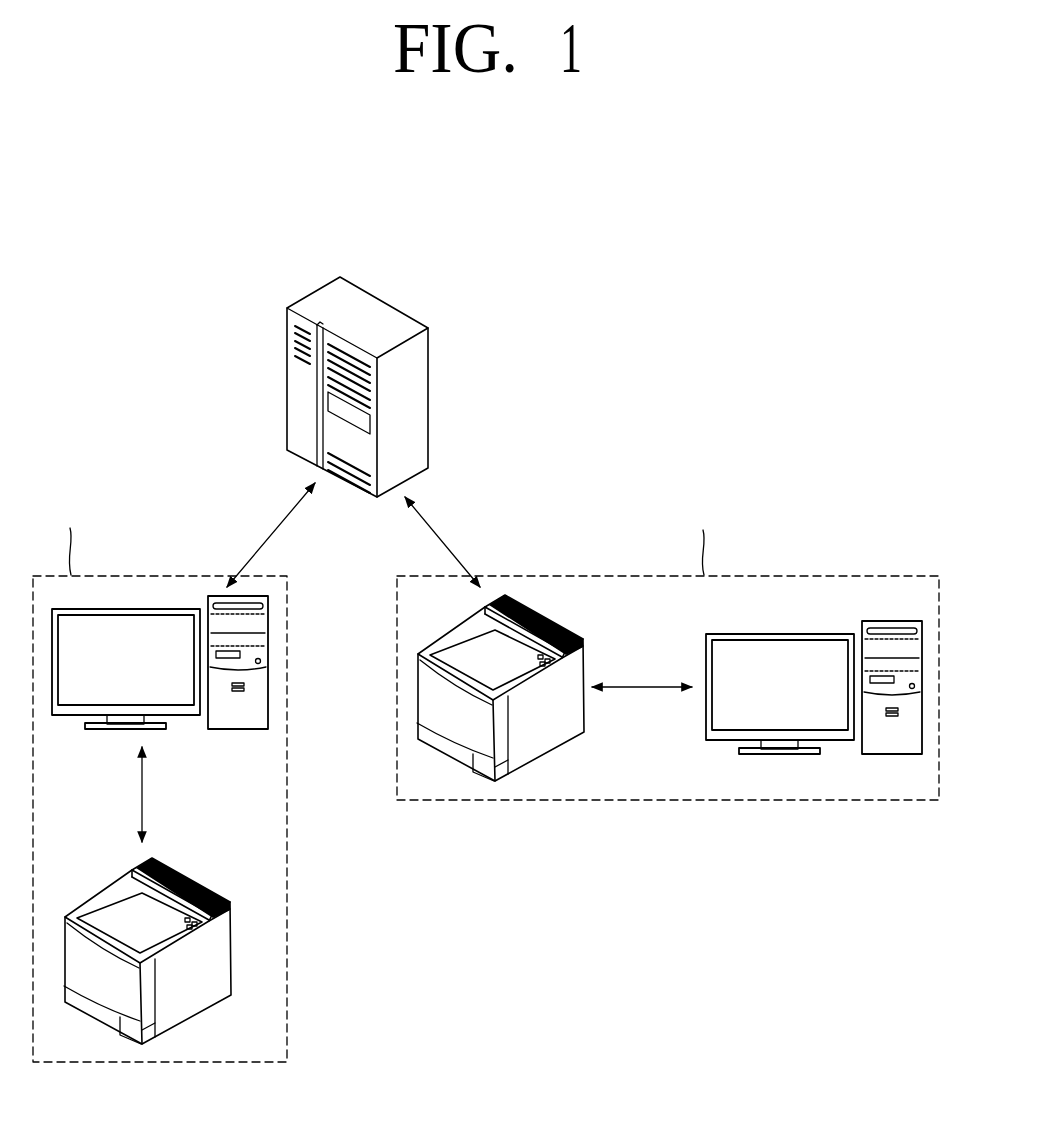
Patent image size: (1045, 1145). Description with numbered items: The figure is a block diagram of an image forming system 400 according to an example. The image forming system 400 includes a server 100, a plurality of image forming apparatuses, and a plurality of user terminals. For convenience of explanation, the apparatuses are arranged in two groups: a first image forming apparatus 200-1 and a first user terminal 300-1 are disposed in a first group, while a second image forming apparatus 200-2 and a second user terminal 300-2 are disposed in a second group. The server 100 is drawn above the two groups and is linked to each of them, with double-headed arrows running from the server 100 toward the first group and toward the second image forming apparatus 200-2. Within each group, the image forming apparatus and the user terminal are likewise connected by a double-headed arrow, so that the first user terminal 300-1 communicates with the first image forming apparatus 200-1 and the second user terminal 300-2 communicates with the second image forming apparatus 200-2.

The image forming system 400 is at (470, 144).
The server 100 is at (348, 274).
The first image forming apparatus 200-1 is at (233, 951).
The second image forming apparatus 200-2 is at (531, 596).
The first user terminal 300-1 is at (128, 608).
The second user terminal 300-2 is at (894, 619).